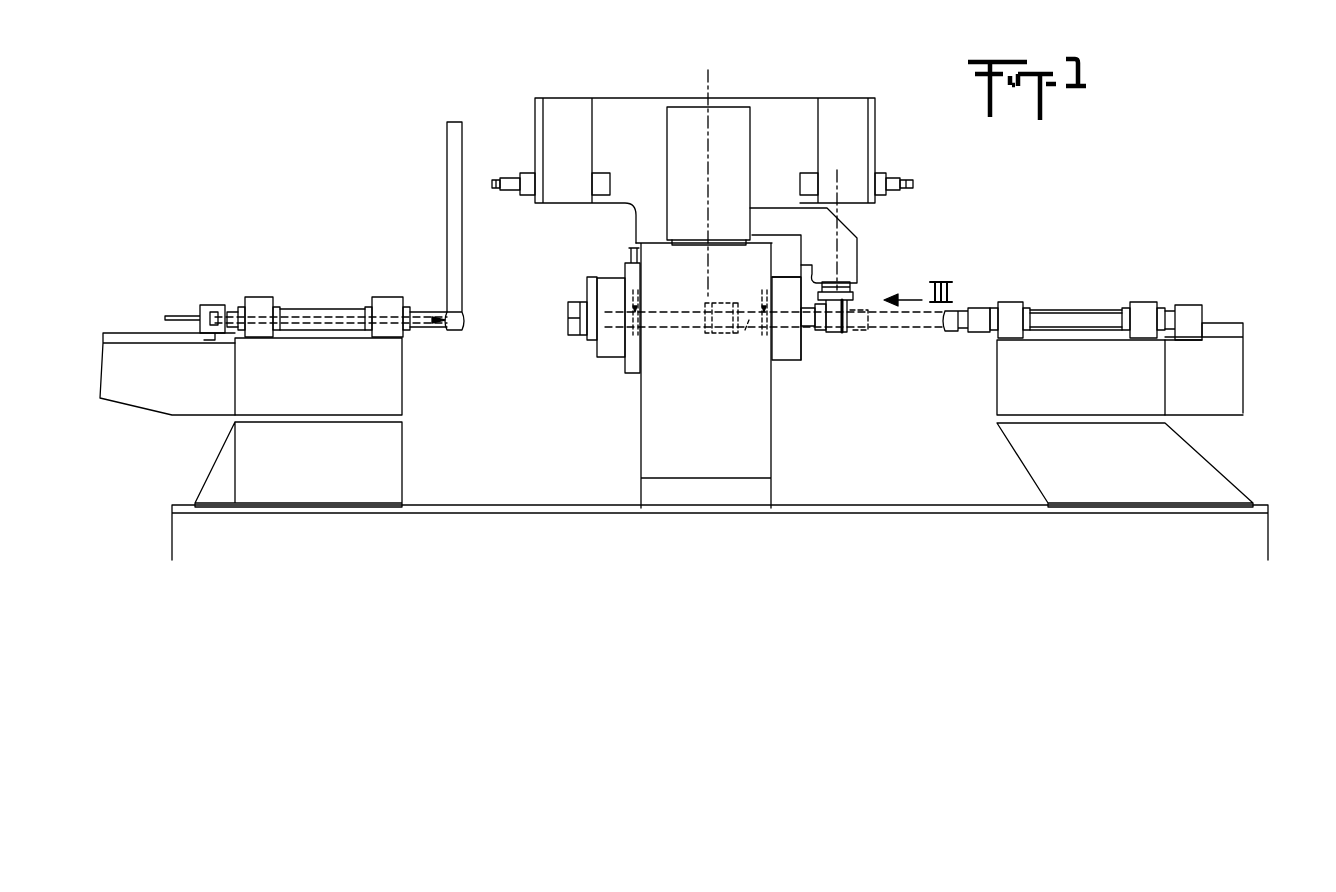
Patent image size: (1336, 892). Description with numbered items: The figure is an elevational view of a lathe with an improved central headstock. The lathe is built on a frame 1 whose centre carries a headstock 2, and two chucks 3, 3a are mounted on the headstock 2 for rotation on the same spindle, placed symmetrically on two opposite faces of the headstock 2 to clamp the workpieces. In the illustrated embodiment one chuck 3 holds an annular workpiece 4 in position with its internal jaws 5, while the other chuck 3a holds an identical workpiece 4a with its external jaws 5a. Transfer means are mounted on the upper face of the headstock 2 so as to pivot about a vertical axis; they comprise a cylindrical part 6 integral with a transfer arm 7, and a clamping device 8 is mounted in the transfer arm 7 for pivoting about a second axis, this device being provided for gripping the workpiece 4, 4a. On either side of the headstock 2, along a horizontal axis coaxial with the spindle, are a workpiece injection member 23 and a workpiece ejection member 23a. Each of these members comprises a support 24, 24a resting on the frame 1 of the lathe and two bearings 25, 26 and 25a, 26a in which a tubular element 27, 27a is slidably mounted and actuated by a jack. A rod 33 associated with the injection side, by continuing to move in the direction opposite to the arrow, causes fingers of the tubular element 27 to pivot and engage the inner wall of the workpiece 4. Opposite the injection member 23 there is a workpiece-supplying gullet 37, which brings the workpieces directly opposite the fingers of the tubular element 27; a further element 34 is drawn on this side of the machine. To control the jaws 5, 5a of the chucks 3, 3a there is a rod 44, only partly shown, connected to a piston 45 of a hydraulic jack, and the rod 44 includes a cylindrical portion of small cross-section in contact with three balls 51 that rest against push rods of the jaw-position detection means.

The frame 1 is at (938, 520).
The headstock 2 is at (752, 450).
The chuck 3 is at (606, 350).
The annular workpiece 4 is at (568, 318).
The internal jaws 5 is at (583, 303).
The chuck 3a is at (798, 362).
The workpiece 4a is at (820, 330).
The external jaws 5a is at (808, 336).
The cylindrical part 6 is at (729, 125).
The transfer arm 7 is at (848, 248).
The clamping device 8 is at (852, 316).
The workpiece injection member 23 is at (286, 300).
The workpiece ejection member 23a is at (1060, 306).
The support 24 is at (375, 396).
The support 24a is at (1030, 393).
The bearing 25 is at (387, 298).
The bearing 25a is at (1012, 300).
The bearing 26 is at (256, 297).
The bearing 26a is at (1142, 306).
The tubular element 27 is at (322, 310).
The tubular element 27a is at (1086, 318).
The rod 33 is at (342, 330).
The block 34 is at (213, 305).
The workpiece-supplying gullet 37 is at (447, 166).
The rod 44 is at (648, 312).
The piston 45 is at (733, 308).
The balls 51 is at (752, 330).